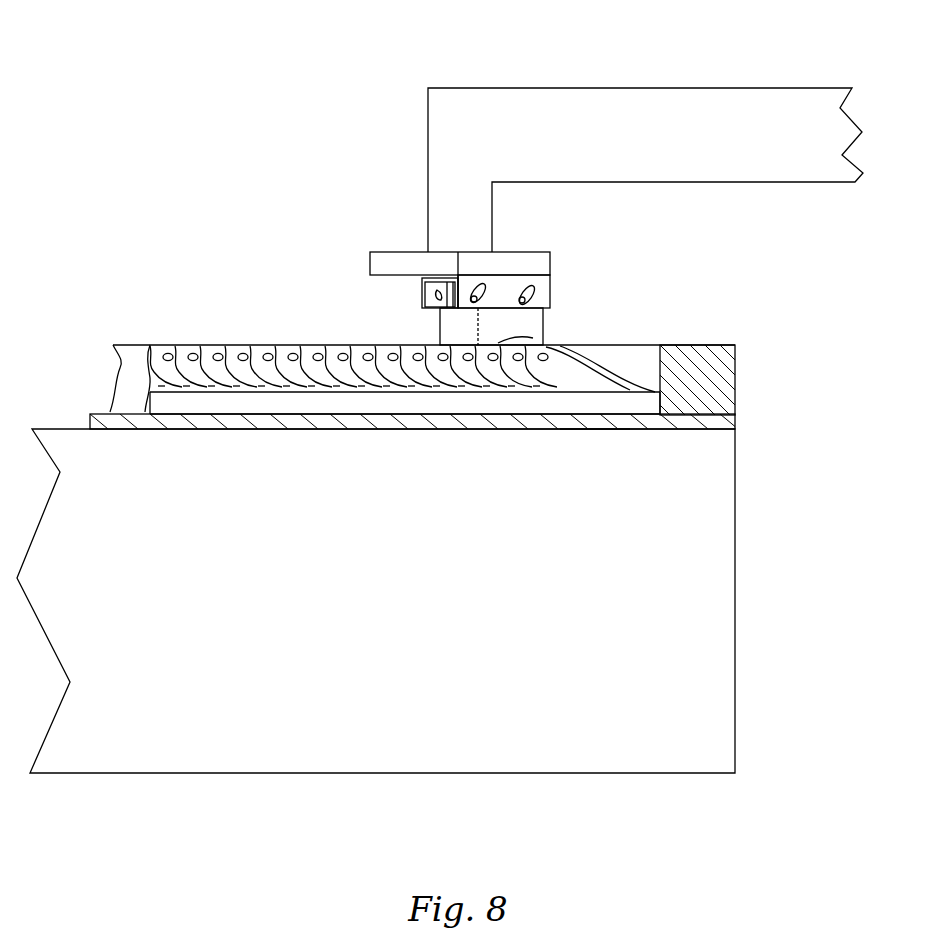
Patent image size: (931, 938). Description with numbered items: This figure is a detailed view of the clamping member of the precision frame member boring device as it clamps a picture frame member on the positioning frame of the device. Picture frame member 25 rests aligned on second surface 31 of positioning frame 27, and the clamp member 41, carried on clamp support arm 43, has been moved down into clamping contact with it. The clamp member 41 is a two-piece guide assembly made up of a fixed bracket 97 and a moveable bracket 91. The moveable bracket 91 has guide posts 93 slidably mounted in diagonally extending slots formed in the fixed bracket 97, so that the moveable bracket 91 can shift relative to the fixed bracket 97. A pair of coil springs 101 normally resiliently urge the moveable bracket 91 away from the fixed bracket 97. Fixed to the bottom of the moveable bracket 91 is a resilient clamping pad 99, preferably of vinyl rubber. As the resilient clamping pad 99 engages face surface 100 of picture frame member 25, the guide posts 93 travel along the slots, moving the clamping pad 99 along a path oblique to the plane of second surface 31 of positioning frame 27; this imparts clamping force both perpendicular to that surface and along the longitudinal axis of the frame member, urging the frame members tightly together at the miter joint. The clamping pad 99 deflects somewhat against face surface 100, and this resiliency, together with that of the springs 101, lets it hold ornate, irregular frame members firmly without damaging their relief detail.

The picture frame member 25 is at (352, 403).
The positioning frame 27 is at (593, 445).
The second surface 31 is at (245, 424).
The clamp member 41 is at (312, 262).
The clamp support arm 43 is at (580, 106).
The moveable bracket 91 is at (432, 294).
The guide posts 93 is at (485, 287).
The fixed bracket 97 is at (512, 283).
The resilient clamping pad 99 is at (530, 329).
The face surface 100 is at (168, 345).
The coil springs 101 is at (470, 300).